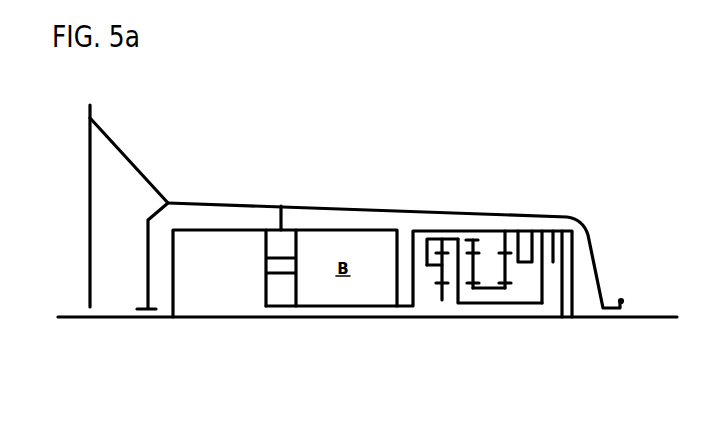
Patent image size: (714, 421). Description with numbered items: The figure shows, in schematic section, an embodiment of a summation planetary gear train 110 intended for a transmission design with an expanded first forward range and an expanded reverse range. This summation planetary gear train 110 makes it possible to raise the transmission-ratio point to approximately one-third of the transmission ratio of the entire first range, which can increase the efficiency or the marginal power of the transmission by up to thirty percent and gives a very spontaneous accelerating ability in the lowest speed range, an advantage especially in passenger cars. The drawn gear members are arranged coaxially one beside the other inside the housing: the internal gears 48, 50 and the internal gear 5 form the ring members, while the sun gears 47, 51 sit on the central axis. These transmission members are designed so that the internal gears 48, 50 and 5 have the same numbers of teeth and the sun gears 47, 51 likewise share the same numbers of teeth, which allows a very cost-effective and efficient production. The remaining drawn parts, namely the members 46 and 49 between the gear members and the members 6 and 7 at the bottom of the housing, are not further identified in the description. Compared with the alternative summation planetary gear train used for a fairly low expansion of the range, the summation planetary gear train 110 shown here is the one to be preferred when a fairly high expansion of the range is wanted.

The summation planetary gear train 110 is at (451, 203).
The internal gear 48 is at (441, 239).
The first contact 46 is at (442, 265).
The sun gear 47 is at (440, 297).
The second contact carrier 49 is at (475, 236).
The internal gear 5 is at (465, 264).
The sun gear 51 is at (467, 265).
The internal gear 50 is at (503, 224).
The base plate 7 is at (512, 316).
The housing bottom wall 6 is at (535, 306).